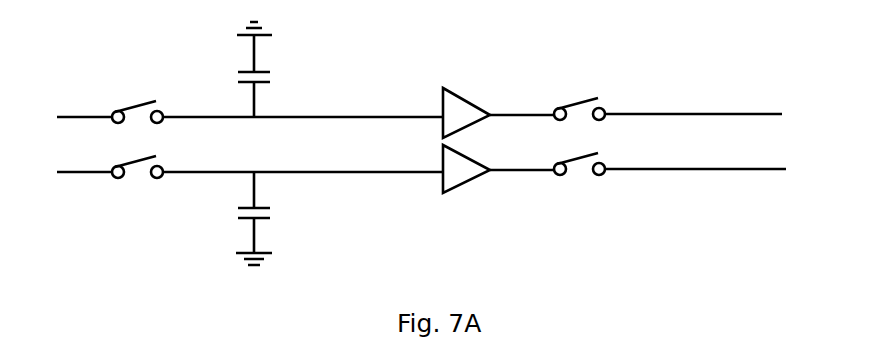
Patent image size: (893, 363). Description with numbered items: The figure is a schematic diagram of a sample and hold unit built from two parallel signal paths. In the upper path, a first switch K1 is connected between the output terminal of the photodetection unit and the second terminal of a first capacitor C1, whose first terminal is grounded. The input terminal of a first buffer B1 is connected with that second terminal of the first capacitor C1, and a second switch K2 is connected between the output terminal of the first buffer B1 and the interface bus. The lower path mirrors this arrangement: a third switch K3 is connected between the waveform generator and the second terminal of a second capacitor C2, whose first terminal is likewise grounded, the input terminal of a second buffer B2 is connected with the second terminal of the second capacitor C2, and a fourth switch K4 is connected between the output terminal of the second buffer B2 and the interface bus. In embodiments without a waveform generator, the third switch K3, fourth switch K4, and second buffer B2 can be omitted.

The first switch K1 is at (148, 105).
The second switch K2 is at (590, 98).
The third switch K3 is at (137, 190).
The fourth switch K4 is at (589, 184).
The first capacitor C1 is at (267, 69).
The second capacitor C2 is at (267, 218).
The first buffer B1 is at (466, 94).
The second buffer B2 is at (466, 189).